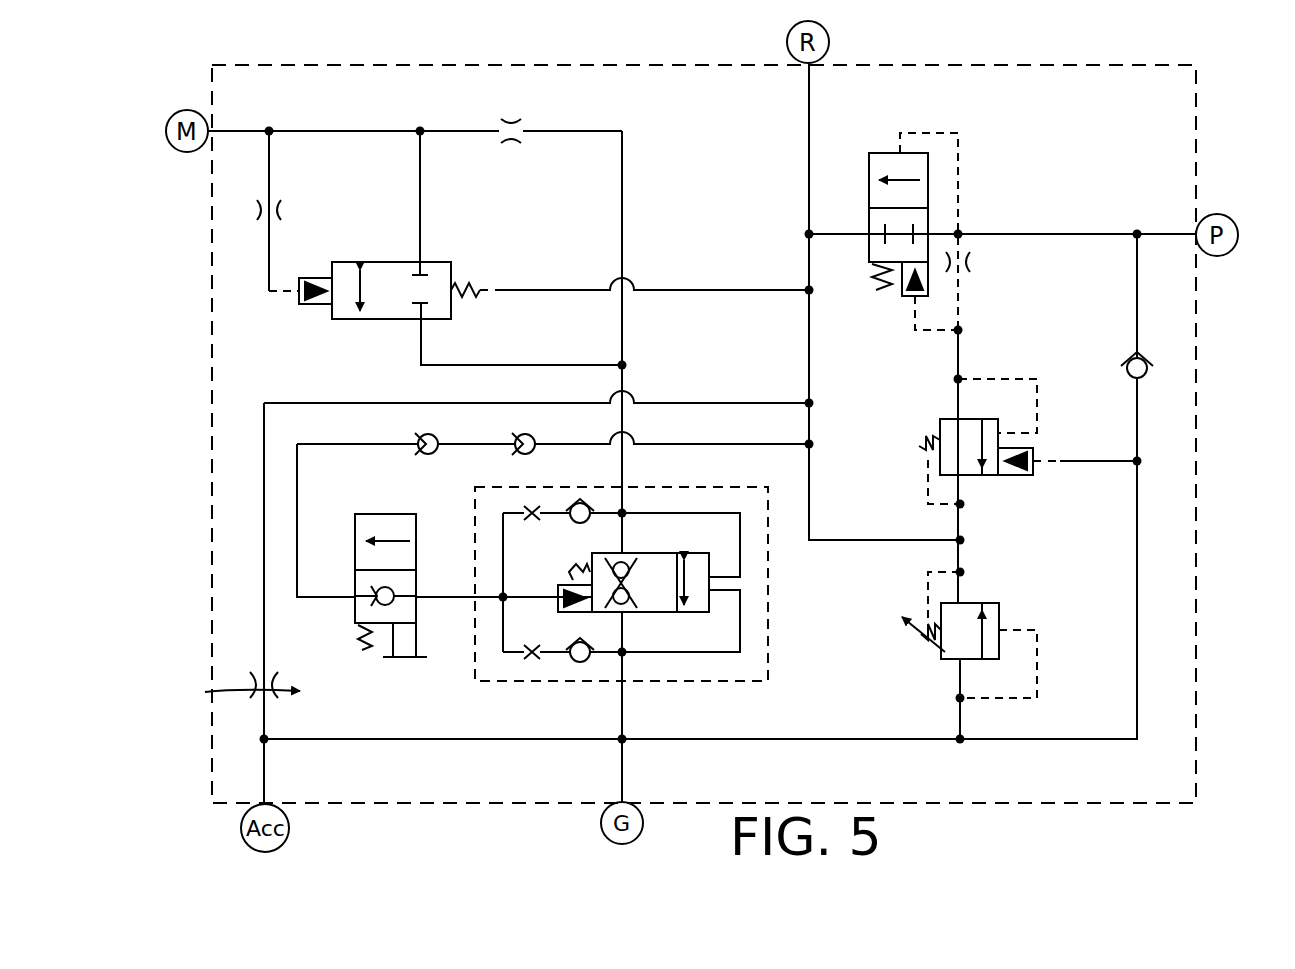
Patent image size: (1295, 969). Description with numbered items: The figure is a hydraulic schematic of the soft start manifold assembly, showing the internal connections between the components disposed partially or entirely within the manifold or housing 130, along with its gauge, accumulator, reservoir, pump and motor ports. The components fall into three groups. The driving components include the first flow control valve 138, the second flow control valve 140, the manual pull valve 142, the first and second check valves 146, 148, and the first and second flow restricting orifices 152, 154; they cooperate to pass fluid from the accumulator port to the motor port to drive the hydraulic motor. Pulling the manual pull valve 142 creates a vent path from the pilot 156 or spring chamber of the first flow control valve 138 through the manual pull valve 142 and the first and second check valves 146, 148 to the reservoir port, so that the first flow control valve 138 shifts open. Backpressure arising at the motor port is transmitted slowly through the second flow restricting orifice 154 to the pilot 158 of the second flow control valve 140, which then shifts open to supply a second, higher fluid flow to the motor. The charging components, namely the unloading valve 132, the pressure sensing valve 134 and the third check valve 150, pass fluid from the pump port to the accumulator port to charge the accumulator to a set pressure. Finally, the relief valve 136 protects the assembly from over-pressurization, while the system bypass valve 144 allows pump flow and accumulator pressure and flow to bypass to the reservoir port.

The manifold or housing 130 is at (1199, 138).
The unloading valve 132 is at (885, 153).
The pressure sensing valve 134 is at (1000, 475).
The relief valve 136 is at (1000, 610).
The first flow control valve 138 is at (669, 601).
The second flow control valve 140 is at (332, 319).
The manual pull valve 142 is at (355, 527).
The system bypass valve 144 is at (250, 688).
The first check valve 146 is at (523, 433).
The second check valve 148 is at (426, 433).
The third check valve 150 is at (1127, 366).
The first flow restricting orifice 152 is at (513, 117).
The second flow restricting orifice 154 is at (258, 212).
The pilot 156 is at (580, 612).
The pilot 158 is at (299, 284).